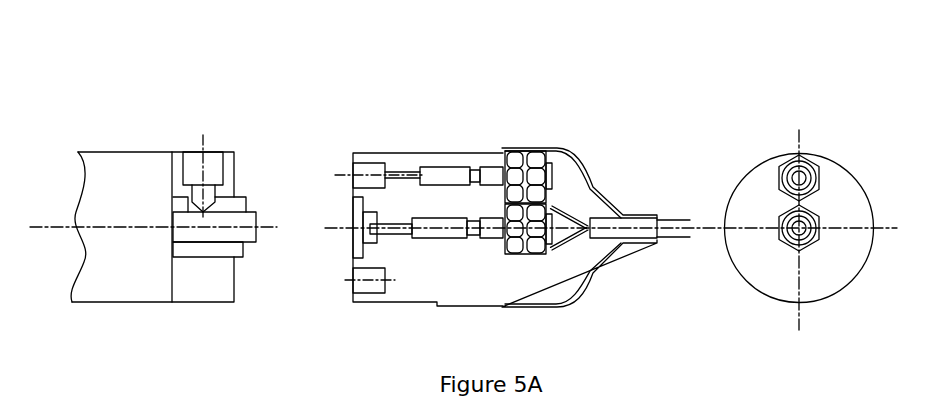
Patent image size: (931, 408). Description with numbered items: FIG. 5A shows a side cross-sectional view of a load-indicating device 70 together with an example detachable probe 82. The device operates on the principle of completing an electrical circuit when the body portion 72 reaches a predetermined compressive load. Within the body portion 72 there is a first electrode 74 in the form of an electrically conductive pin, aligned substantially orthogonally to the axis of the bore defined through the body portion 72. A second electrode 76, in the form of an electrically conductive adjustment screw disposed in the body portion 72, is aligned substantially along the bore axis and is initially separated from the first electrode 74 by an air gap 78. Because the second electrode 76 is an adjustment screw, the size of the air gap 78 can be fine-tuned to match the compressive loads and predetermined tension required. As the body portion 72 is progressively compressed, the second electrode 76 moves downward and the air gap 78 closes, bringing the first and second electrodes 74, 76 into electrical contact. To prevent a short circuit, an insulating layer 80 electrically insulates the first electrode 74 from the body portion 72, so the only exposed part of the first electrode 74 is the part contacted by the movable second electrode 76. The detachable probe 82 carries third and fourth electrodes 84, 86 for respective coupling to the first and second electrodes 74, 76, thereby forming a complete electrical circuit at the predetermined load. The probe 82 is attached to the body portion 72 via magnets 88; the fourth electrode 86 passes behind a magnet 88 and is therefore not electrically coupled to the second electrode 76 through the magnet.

The load-indicating device 70 is at (164, 108).
The body portion 72 is at (183, 293).
The first electrode 74 is at (245, 235).
The second electrode 76 is at (212, 170).
The air gap 78 is at (190, 208).
The insulating layer 80 is at (205, 252).
The detachable probe 82 is at (565, 125).
The third electrode 84 is at (402, 220).
The fourth electrode 86 is at (410, 172).
The magnets 88 is at (351, 165).